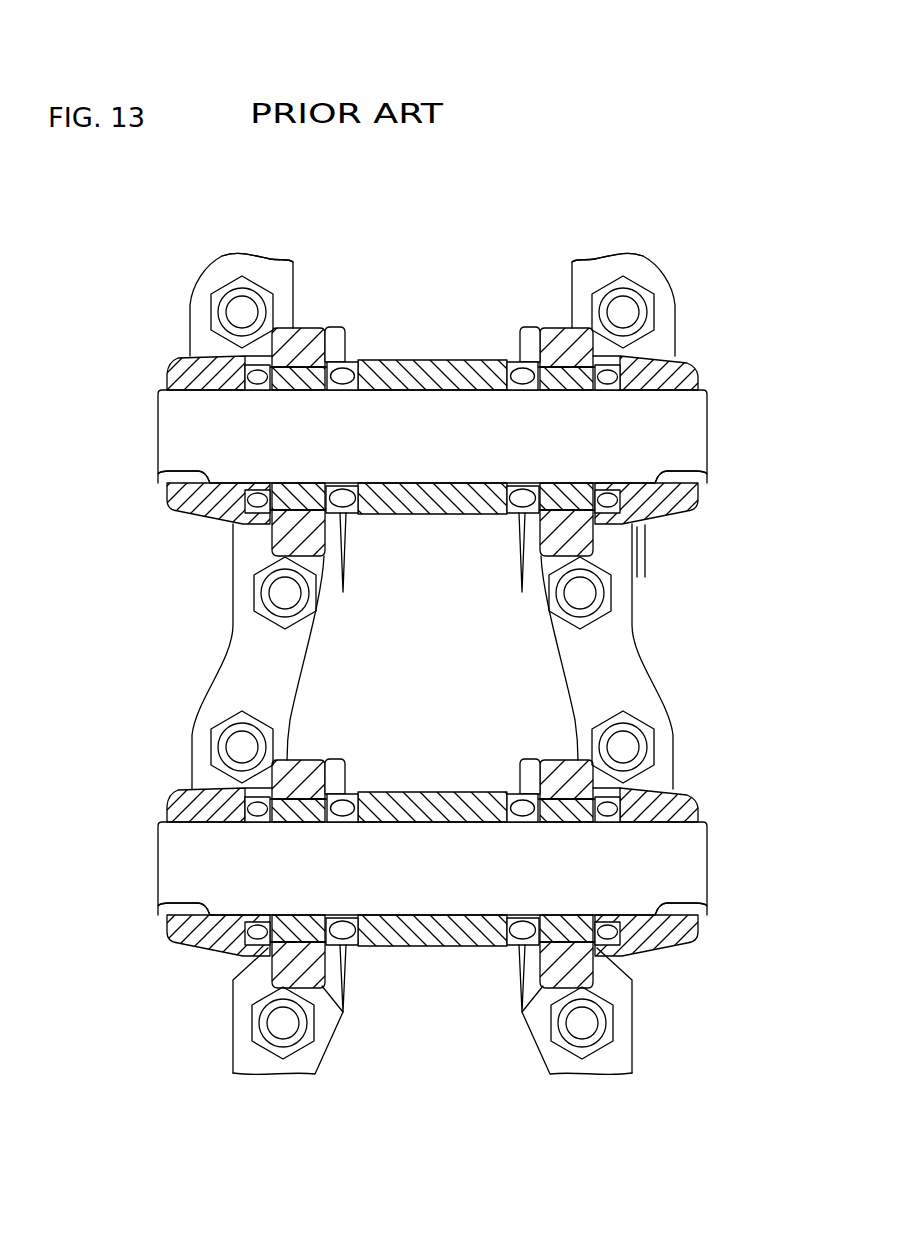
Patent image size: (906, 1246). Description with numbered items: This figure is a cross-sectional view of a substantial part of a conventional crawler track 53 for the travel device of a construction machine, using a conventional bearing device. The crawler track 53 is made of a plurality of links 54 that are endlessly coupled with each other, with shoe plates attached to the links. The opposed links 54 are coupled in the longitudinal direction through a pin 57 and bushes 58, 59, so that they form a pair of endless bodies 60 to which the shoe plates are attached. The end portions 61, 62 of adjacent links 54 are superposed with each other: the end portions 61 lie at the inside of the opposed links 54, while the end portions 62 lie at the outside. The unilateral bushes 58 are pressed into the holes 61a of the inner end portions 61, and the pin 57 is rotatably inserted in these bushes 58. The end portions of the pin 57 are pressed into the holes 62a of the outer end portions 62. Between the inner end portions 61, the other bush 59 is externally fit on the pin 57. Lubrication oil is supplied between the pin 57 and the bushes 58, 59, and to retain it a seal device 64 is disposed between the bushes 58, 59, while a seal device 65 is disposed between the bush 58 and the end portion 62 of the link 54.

The crawler track 53 is at (694, 266).
The link 54 is at (181, 342).
The pin 57 is at (439, 396).
The bush 58 is at (282, 345).
The bush 59 is at (393, 359).
The endless body 60 is at (181, 657).
The end portion 61 is at (330, 345).
The hole 61a is at (343, 594).
The end portion 62 is at (205, 510).
The hole 62a is at (200, 473).
The seal device 64 is at (346, 511).
The seal device 65 is at (645, 525).